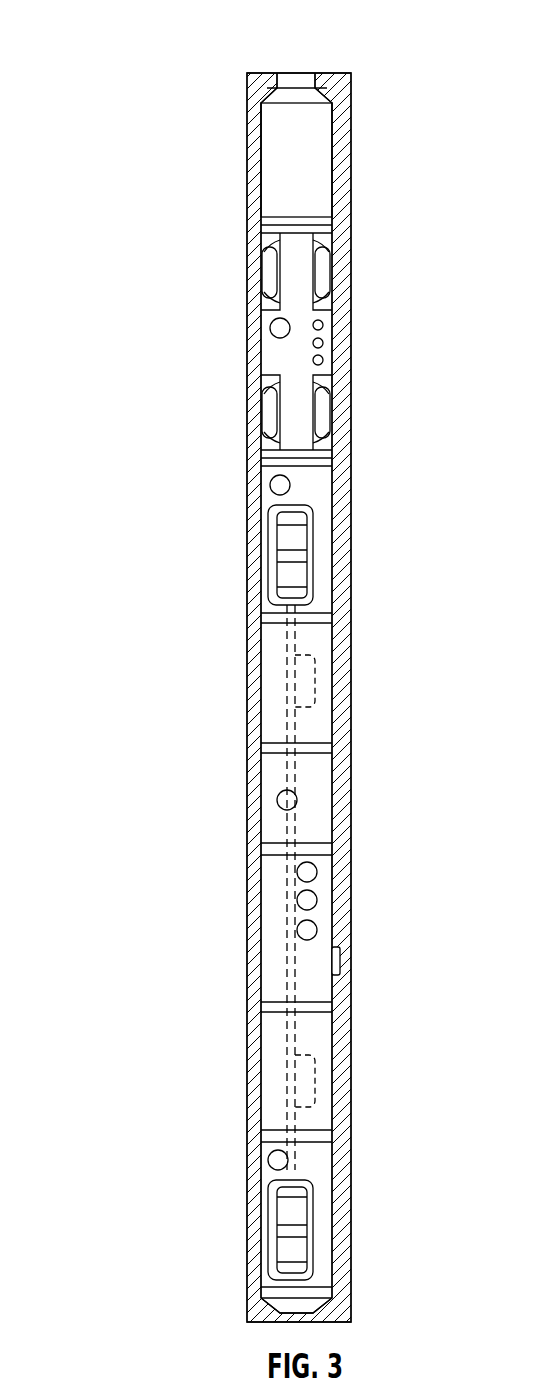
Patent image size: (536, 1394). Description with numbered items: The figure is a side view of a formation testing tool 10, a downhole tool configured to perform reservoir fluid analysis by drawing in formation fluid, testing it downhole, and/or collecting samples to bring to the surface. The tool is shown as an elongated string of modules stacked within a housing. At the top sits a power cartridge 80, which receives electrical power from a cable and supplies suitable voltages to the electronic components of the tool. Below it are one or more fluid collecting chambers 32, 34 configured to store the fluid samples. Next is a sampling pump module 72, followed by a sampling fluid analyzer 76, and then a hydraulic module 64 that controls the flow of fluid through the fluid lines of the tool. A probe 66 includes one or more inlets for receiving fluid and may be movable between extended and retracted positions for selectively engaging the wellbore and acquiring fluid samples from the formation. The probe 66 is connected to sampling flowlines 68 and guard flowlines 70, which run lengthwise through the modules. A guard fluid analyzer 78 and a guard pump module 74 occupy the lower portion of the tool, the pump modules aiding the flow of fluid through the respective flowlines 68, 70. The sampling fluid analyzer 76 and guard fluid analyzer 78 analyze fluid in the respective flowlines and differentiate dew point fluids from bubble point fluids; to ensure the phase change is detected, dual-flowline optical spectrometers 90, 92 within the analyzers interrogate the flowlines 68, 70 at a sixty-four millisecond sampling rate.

The formation testing tool 10 is at (120, 38).
The power cartridge 80 is at (360, 165).
The fluid collecting chamber 32 is at (360, 268).
The fluid collecting chamber 34 is at (363, 347).
The sampling pump module 72 is at (363, 537).
The sampling fluid analyzer 76 is at (305, 690).
The hydraulic module 64 is at (363, 800).
The probe 66 is at (363, 962).
The guard fluid analyzer 78 is at (305, 1096).
The guard pump module 74 is at (355, 1212).
The dual-flowline optical spectrometer 90 is at (285, 682).
The sampling flowline 68 is at (285, 702).
The guard flowline 70 is at (292, 1032).
The dual-flowline optical spectrometer 92 is at (292, 1090).